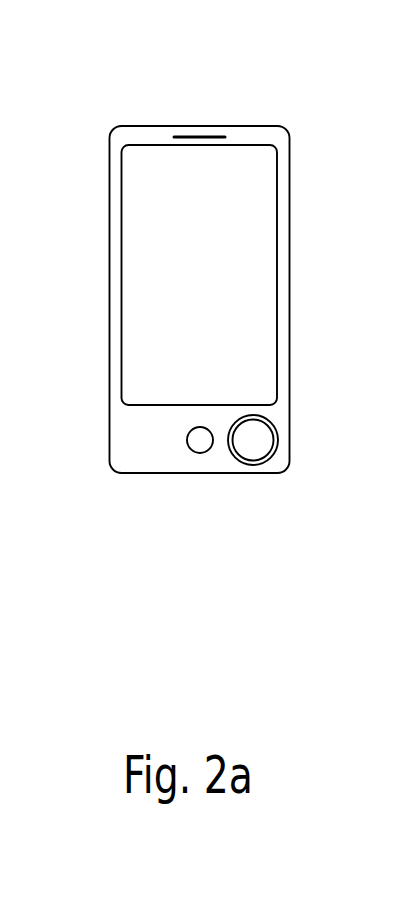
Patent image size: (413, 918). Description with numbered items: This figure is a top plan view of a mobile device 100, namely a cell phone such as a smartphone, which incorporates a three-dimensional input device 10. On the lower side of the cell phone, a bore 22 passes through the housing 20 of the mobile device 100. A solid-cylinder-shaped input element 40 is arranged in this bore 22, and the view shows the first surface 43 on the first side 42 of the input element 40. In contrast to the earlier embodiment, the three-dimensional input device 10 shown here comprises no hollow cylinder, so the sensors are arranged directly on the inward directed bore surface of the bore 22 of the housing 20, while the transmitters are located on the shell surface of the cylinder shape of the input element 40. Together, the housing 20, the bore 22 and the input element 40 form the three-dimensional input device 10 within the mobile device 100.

The mobile device 100 is at (100, 210).
The 3D input device 10 is at (243, 483).
The housing 20 is at (218, 423).
The bore 22 is at (224, 412).
The input element 40 is at (258, 432).
The first side 42 is at (222, 448).
The first surface 43 is at (258, 443).